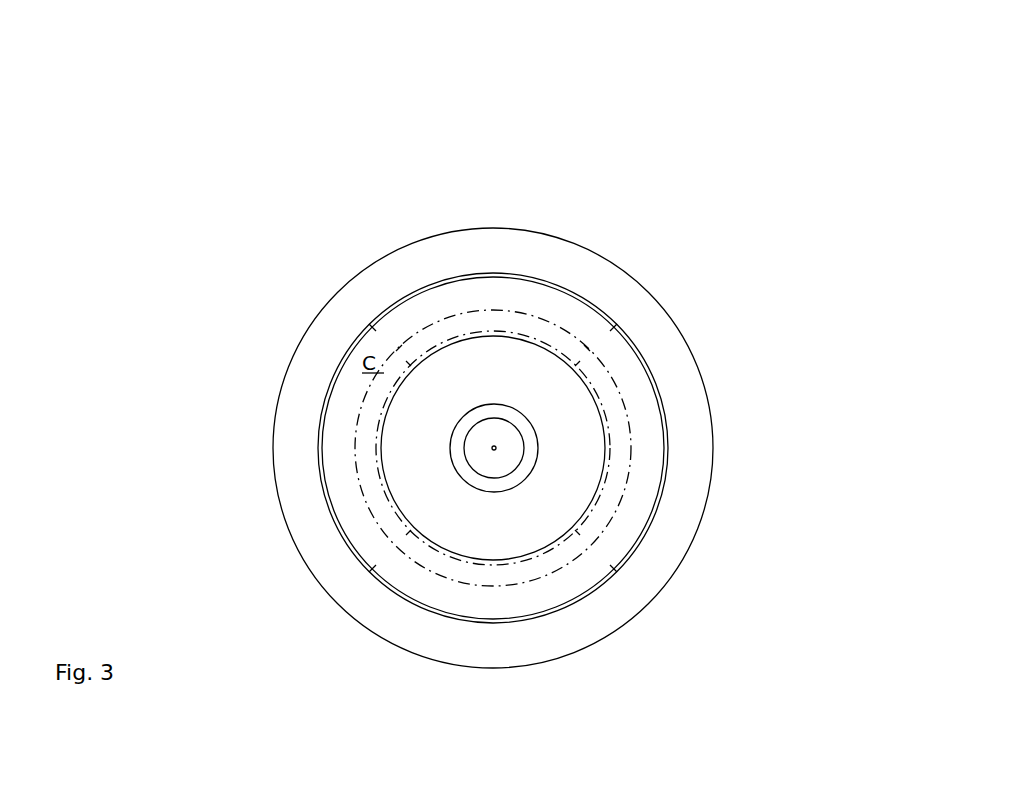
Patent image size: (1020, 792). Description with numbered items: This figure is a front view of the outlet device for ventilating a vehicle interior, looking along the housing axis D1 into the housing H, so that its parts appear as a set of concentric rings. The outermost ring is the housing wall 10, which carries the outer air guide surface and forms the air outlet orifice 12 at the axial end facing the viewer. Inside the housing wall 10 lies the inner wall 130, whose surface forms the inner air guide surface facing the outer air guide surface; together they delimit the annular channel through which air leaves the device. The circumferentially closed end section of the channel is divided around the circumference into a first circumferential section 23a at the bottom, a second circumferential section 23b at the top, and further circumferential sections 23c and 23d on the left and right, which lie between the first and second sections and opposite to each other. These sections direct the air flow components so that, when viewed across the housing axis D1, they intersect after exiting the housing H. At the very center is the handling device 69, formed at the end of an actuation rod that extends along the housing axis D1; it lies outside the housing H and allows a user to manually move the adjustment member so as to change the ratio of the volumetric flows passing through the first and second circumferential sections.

The housing wall 10 is at (433, 283).
The second circumferential section 23b is at (525, 293).
The inner wall 130 is at (533, 346).
The handling device 69 is at (490, 468).
The housing axis D1 is at (503, 448).
The circumferential section 23d is at (660, 436).
The circumferential section 23c is at (332, 450).
The air outlet orifice 12 is at (372, 524).
The first circumferential section 23a is at (543, 598).
The housing H is at (447, 160).